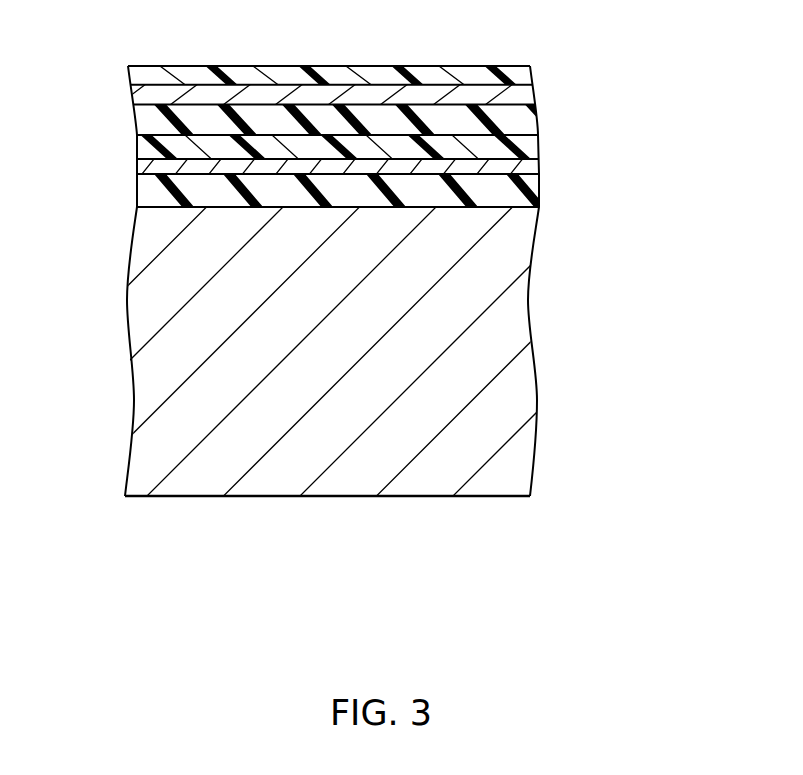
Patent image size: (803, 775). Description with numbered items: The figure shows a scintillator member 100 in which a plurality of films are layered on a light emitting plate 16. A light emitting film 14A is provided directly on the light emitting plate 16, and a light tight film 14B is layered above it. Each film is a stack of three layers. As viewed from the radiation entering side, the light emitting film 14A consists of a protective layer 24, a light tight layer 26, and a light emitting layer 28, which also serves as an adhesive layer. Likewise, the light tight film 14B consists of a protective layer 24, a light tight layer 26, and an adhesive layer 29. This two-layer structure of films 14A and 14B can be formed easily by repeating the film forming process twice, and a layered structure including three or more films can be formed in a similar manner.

The scintillator member 100 is at (703, 8).
The light emitting film 14A is at (110, 137).
The light tight film 14B is at (110, 65).
The light emitting plate 16 is at (510, 332).
The protective layer 24 is at (532, 72).
The light tight layer 26 is at (535, 98).
The light emitting layer 28 is at (541, 193).
The adhesive layer 29 is at (538, 125).